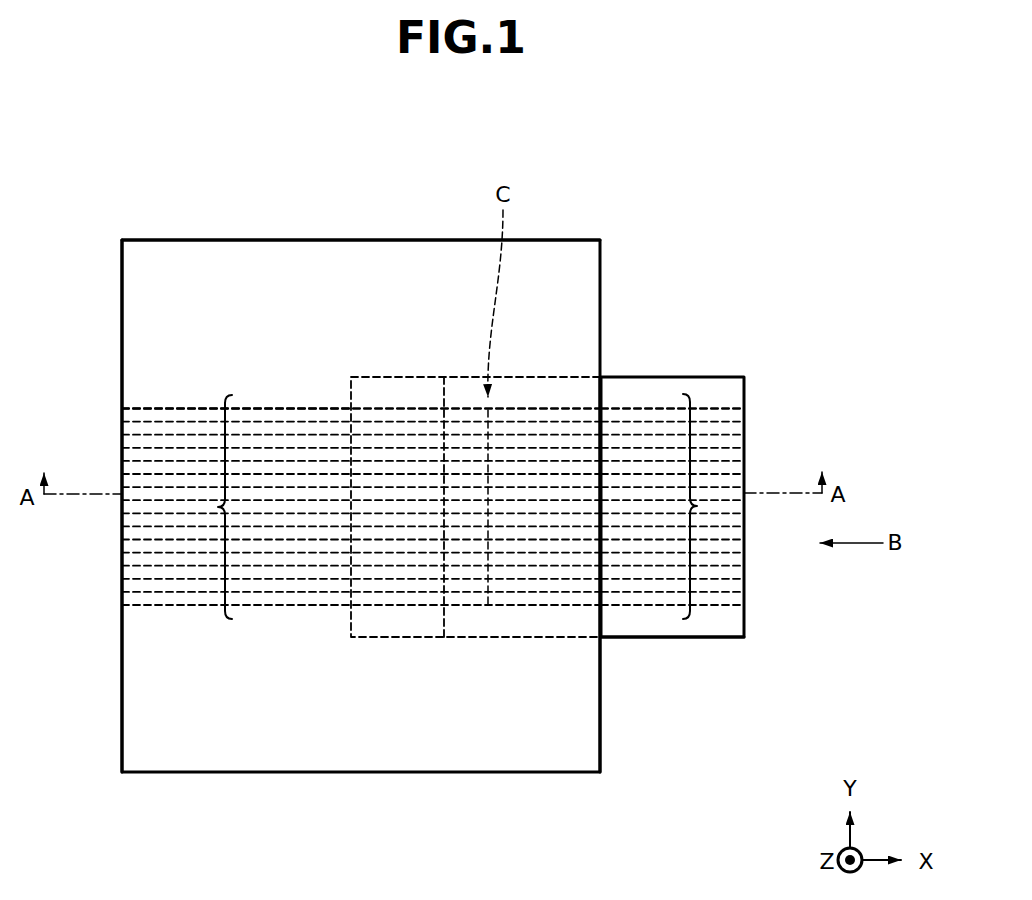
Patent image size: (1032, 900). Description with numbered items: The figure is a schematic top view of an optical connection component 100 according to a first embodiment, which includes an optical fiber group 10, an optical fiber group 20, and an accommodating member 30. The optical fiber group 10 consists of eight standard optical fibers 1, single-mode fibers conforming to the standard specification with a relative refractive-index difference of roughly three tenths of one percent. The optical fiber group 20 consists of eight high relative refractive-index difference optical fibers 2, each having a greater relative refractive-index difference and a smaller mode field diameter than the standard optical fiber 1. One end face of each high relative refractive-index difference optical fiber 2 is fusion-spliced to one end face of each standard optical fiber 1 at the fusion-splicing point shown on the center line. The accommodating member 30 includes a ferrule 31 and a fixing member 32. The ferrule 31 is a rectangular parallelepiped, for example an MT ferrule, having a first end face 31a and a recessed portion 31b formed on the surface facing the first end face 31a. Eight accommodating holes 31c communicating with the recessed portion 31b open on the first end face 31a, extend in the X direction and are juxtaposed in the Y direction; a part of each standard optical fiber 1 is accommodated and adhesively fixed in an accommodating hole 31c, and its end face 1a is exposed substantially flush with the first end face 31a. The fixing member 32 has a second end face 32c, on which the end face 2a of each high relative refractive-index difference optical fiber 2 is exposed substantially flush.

The optical connection component 100 is at (675, 169).
The accommodating member 30 is at (577, 211).
The ferrule 31 is at (379, 231).
The first end face 31a is at (122, 750).
The recessed portion 31b is at (570, 637).
The accommodating hole 31c is at (282, 412).
The standard optical fiber 1 is at (172, 398).
The end face of standard optical fiber 1a is at (122, 410).
The optical fiber group 10 is at (218, 507).
The fixing member 32 is at (621, 364).
The second end face 32c is at (744, 620).
The high relative refractive-index difference optical fiber 2 is at (715, 415).
The end face of high relative refractive-index difference optical fiber 2a is at (744, 411).
The optical fiber group 20 is at (697, 506).